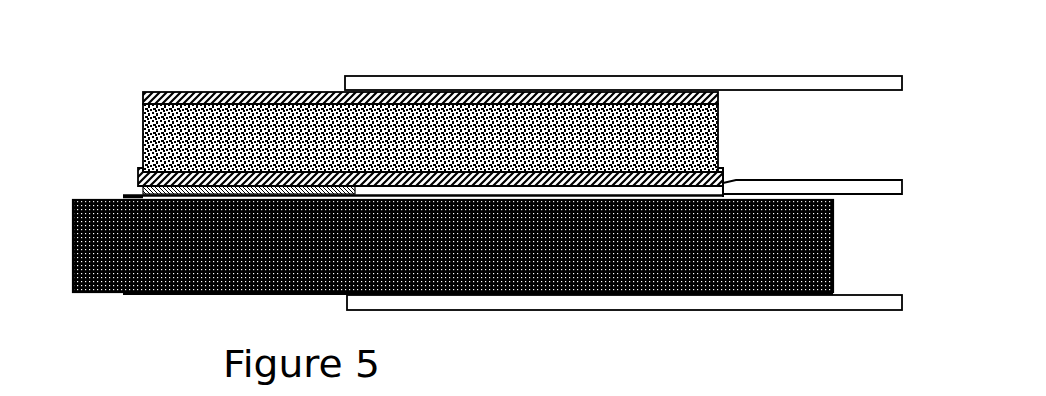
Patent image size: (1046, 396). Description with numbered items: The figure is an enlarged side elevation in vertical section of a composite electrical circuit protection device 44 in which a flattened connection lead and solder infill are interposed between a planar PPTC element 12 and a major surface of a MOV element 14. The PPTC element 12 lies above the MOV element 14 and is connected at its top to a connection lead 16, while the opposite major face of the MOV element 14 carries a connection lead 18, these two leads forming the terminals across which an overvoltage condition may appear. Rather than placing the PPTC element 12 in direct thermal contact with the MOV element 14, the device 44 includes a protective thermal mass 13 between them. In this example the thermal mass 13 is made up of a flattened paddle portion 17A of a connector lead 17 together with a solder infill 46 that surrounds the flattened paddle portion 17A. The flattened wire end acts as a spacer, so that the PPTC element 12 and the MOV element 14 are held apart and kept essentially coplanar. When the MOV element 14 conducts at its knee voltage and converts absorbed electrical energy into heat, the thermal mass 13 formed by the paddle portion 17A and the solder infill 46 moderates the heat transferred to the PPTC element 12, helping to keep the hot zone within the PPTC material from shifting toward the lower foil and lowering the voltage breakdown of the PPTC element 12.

The PPTC element 12 is at (245, 92).
The thermal mass 13 is at (356, 191).
The MOV element 14 is at (835, 251).
The connection lead 16 is at (820, 76).
The connector lead 17 is at (832, 188).
The flattened paddle portion 17A is at (726, 183).
The connection lead 18 is at (815, 303).
The device 44 is at (560, 330).
The solder infill 46 is at (137, 190).